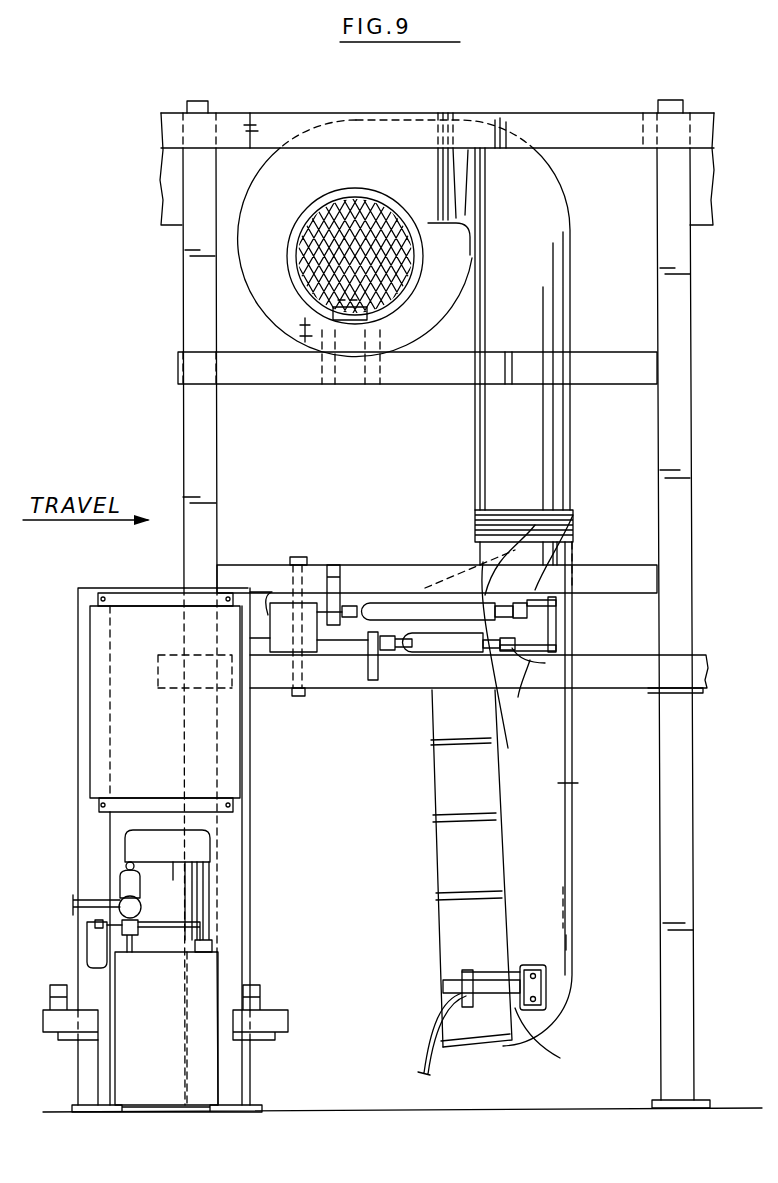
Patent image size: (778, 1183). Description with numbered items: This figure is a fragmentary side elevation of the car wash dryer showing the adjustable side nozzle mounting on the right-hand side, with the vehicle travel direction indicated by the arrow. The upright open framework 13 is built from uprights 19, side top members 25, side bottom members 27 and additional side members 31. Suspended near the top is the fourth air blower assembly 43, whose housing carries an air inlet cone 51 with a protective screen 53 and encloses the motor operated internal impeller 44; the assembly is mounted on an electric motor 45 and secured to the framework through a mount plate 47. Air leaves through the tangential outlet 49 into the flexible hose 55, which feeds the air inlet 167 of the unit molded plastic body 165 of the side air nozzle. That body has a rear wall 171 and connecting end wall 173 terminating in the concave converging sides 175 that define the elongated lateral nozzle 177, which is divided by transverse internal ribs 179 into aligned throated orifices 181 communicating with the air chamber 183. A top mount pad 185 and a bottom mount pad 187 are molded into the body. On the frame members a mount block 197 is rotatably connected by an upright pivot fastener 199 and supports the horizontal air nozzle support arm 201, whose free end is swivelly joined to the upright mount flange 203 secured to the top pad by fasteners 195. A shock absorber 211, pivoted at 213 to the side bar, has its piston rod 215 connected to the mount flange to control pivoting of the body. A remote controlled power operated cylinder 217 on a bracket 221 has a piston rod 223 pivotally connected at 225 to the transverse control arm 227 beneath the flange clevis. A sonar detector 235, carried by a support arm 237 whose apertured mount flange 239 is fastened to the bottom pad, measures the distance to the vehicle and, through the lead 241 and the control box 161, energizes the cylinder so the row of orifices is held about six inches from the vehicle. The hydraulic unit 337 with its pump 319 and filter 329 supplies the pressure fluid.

The upright open framework 13 is at (72, 820).
The uprights 19 is at (187, 441).
The side top members 25 is at (552, 113).
The side bottom members 27 is at (630, 688).
The additional side members 31 is at (643, 580).
The fourth air blower assembly 43 is at (250, 193).
The internal impeller 44 is at (337, 268).
The electric motor 45 is at (320, 253).
The mount plate 47 is at (298, 331).
The tangential outlet 49 is at (442, 226).
The air inlet cone 51 is at (297, 221).
The protective screen 53 is at (378, 226).
The flexible hose 55 is at (483, 433).
The control box 161 is at (97, 733).
The unit molded plastic body 165 is at (584, 837).
The air inlet 167 is at (574, 553).
The rear wall 171 is at (568, 782).
The end wall 173 is at (577, 942).
The concave converging sides 175 is at (437, 797).
The elongated lateral nozzle 177 is at (430, 866).
The transverse internal ribs 179 is at (458, 745).
The throated orifices 181 is at (436, 840).
The air chamber 183 is at (542, 889).
The top mount pad 185 is at (558, 628).
The bottom mount pad 187 is at (549, 998).
The fasteners 195 is at (536, 975).
The mount block 197 is at (257, 605).
The upright pivot fastener 199 is at (299, 554).
The air nozzle support arm 201 is at (333, 636).
The mount flange 203 is at (576, 531).
The shock absorber 211 is at (405, 600).
The shock absorber pivot mount 213 is at (346, 600).
The piston rod 215 is at (482, 562).
The power operated cylinder 217 is at (448, 648).
The bracket 221 is at (369, 672).
The piston rod 223 is at (510, 745).
The pivotal connection 225 is at (520, 690).
The transverse control arm 227 is at (545, 663).
The sonar detector 235 is at (445, 982).
The support arm 237 is at (560, 1045).
The apertured mount flange 239 is at (548, 1010).
The lead 241 is at (420, 1052).
The pump 319 is at (135, 850).
The filter 329 is at (98, 947).
The hydraulic unit 337 is at (165, 1090).